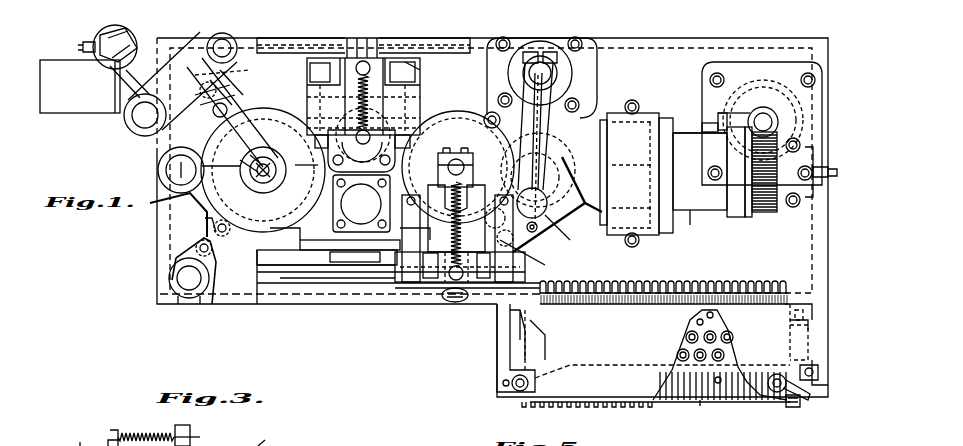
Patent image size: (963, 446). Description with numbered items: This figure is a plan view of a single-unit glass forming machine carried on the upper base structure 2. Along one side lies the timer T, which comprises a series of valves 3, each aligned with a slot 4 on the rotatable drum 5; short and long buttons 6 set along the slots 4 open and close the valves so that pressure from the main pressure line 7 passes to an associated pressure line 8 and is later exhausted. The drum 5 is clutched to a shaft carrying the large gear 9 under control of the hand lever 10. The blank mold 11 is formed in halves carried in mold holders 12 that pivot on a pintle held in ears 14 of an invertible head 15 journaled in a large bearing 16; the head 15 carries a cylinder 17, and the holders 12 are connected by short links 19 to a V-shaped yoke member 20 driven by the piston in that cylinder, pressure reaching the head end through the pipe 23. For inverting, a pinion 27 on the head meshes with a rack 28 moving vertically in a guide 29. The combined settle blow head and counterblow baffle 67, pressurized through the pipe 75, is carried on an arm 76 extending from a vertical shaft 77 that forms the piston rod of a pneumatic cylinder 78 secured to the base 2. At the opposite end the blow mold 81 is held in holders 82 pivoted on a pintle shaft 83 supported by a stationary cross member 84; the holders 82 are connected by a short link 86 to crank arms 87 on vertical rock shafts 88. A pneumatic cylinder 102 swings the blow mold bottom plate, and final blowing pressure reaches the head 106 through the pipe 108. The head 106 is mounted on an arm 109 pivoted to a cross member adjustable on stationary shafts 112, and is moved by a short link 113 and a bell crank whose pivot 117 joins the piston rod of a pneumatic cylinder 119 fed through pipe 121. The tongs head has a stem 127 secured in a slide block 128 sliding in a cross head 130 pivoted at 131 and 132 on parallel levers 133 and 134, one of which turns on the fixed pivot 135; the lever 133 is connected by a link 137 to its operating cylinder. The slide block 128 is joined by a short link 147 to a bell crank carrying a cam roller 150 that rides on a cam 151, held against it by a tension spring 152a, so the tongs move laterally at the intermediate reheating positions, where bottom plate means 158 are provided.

In FIG. 1, the upper base structure 2 is at (635, 46).
In FIG. 1, the valves 3 is at (676, 358).
In FIG. 1, the slot 4 is at (720, 403).
In FIG. 1, the rotatable drum 5 is at (750, 402).
In FIG. 1, the short and long buttons 6 is at (700, 406).
In FIG. 1, the main pressure line 7 is at (500, 386).
In FIG. 1, the pressure line 8 is at (696, 283).
In FIG. 1, the large gear 9 is at (792, 411).
In FIG. 1, the hand lever 10 is at (800, 405).
In FIG. 1, the blank mold 11 is at (432, 126).
In FIG. 1, the mold holder 12 is at (450, 111).
In FIG. 1, the ears 14 is at (577, 210).
In FIG. 1, the invertible head 15 is at (670, 216).
In FIG. 1, the large bearing 16 is at (638, 118).
In FIG. 1, the cylinder 17 is at (678, 207).
In FIG. 1, the short links 19 is at (492, 110).
In FIG. 1, the V-shaped yoke member 20 is at (548, 235).
In FIG. 1, the pipe 23 is at (820, 184).
In FIG. 1, the pinion 27 is at (762, 213).
In FIG. 1, the rack 28 is at (768, 115).
In FIG. 1, the guide 29 is at (763, 114).
In FIG. 1, the combined settle blow head and counterblow baffle 67 is at (557, 250).
In FIG. 1, the pipe 75 is at (532, 234).
In FIG. 1, the arm 76 is at (551, 100).
In FIG. 1, the vertical shaft 77 is at (546, 60).
In FIG. 1, the pneumatic cylinder 78 is at (564, 72).
In FIG. 1, the blow mold 81 is at (186, 182).
In FIG. 1, the holder 82 is at (234, 98).
In FIG. 1, the pintle shaft 83 is at (180, 178).
In FIG. 1, the stationary cross member 84 is at (162, 250).
In FIG. 1, the short link 86 is at (215, 252).
In FIG. 1, the crank arms 87 is at (212, 300).
In FIG. 1, the vertical rock shafts 88 is at (188, 284).
In FIG. 1, the pneumatic cylinder 102 is at (65, 100).
In FIG. 1, the head 106 is at (276, 160).
In FIG. 1, the pipe 108 is at (254, 177).
In FIG. 1, the arm 109 is at (255, 152).
In FIG. 1, the stationary shafts 112 is at (233, 35).
In FIG. 1, the short link 113 is at (245, 170).
In FIG. 1, the pivot 117 is at (130, 28).
In FIG. 1, the pneumatic cylinder 119 is at (85, 33).
In FIG. 1, the pipe 121 is at (465, 168).
In FIG. 3, the stem 127 is at (190, 428).
In FIG. 3, the slide block 128 is at (140, 438).
In FIG. 1, the cross head 130 is at (390, 126).
In FIG. 1, the pintle 131 is at (322, 160).
In FIG. 1, the pintle 132 is at (420, 150).
In FIG. 1, the lever 133 is at (326, 58).
In FIG. 1, the lever 134 is at (415, 65).
In FIG. 1, the fixed pivot 135 is at (278, 273).
In FIG. 1, the link 137 is at (253, 290).
In FIG. 3, the short link 147 is at (82, 445).
In FIG. 1, the cam roller 150 is at (448, 298).
In FIG. 1, the cam 151 is at (245, 62).
In FIG. 1, the tension spring 152a is at (385, 60).
In FIG. 3, the tension spring 152a is at (213, 407).
In FIG. 1, the bottom plate means 158 is at (361, 203).
In FIG. 1, the timer T is at (542, 345).